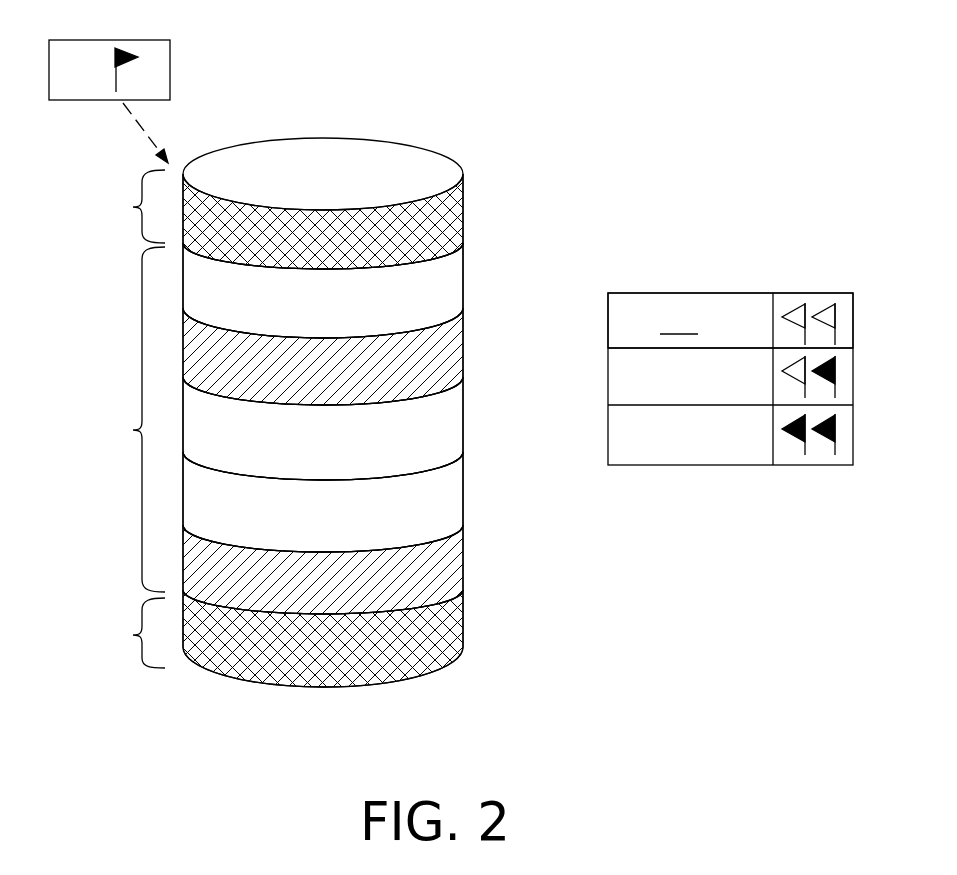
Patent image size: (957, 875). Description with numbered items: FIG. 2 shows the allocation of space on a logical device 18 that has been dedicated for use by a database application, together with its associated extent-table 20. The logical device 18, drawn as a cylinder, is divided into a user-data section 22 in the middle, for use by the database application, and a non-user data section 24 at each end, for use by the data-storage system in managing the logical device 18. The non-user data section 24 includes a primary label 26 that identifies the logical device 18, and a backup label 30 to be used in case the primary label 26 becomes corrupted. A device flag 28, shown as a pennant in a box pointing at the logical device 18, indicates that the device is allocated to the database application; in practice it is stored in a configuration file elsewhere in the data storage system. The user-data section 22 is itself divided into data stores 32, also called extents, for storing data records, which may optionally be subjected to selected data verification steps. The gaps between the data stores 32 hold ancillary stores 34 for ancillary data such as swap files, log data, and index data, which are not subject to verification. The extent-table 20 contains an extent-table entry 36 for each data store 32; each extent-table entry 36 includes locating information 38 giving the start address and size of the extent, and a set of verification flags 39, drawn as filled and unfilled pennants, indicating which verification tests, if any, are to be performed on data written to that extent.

The logical device 18 is at (420, 113).
The extent-table 20 is at (686, 292).
The user-data section 22 is at (133, 430).
The non-user data section 24 is at (133, 207).
The primary label 26 is at (463, 224).
The device flag 28 is at (170, 78).
The backup label 30 is at (463, 635).
The data store 32 is at (463, 290).
The ancillary store 34 is at (463, 356).
The extent-table entry 36 is at (855, 336).
The locating information 38 is at (679, 319).
The verification flags 39 is at (810, 292).